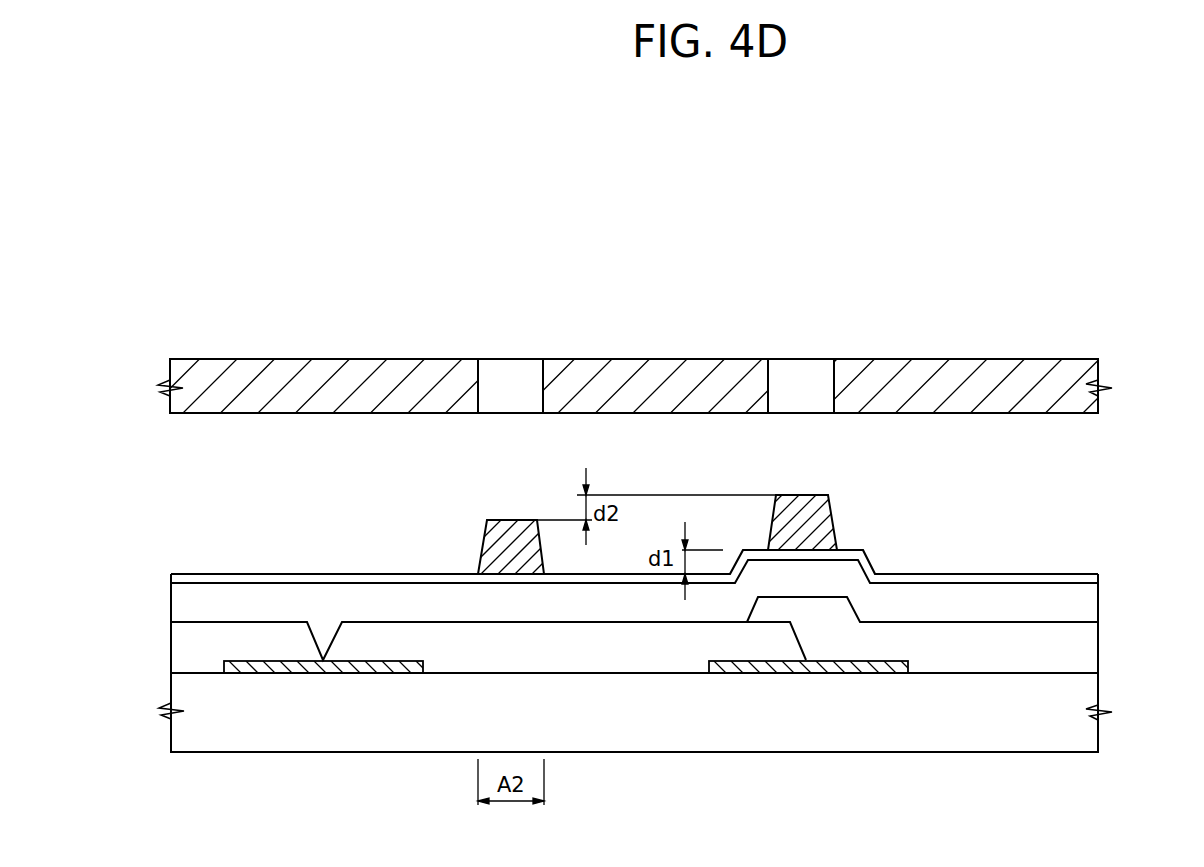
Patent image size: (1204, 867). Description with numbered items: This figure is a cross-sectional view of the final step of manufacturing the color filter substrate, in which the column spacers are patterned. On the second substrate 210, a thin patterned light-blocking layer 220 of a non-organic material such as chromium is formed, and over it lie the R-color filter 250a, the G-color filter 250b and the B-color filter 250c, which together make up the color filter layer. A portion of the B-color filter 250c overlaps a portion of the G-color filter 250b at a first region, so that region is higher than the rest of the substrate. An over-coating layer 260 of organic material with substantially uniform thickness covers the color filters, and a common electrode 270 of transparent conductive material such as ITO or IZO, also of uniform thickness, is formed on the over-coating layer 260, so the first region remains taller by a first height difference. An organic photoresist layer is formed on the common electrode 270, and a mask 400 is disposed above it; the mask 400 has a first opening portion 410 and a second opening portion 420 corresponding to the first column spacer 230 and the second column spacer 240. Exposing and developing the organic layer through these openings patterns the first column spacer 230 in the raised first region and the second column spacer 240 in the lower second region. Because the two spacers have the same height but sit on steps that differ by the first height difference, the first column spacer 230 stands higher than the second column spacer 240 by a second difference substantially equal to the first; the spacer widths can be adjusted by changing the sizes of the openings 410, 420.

The mask 400 is at (1108, 378).
The first opening portion 410 is at (797, 363).
The second opening portion 420 is at (508, 363).
The first column spacer 230 is at (832, 520).
The second column spacer 240 is at (487, 542).
The common electrode 270 is at (1100, 578).
The over-coating layer 260 is at (1100, 605).
The B-color filter 250c is at (1100, 633).
The G-color filter 250b is at (630, 663).
The R-color filter 250a is at (213, 662).
The light-blocking layer 220 is at (908, 664).
The second substrate 210 is at (1100, 690).